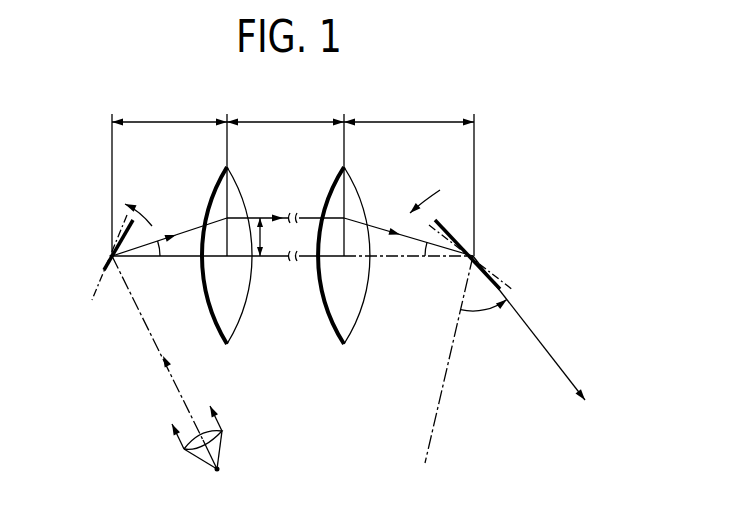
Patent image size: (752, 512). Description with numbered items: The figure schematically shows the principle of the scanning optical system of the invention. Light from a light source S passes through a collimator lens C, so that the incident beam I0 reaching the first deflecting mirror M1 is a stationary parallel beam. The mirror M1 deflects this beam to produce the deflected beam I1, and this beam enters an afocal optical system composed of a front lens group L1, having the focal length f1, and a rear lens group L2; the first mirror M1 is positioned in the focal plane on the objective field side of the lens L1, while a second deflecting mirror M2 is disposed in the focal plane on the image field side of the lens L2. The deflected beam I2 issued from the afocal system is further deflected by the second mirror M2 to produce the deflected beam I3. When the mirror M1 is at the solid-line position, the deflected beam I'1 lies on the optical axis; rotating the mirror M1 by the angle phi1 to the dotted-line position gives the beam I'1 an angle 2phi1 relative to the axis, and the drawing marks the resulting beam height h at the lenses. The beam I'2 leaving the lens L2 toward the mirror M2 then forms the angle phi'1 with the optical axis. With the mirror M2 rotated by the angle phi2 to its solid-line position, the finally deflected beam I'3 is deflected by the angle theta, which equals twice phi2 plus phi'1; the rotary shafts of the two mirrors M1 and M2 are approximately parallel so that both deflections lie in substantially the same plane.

The focal length of lens L1 f1 is at (293, 174).
The front lens group L1 is at (238, 330).
The rear lens group L2 is at (356, 330).
The first deflecting mirror M1 is at (98, 272).
The second deflecting mirror M2 is at (500, 287).
The incident beam I0 is at (176, 373).
The deflected beam from first mirror I1 is at (180, 259).
The deflected beam after rotation of first mirror I'1 is at (252, 203).
The deflected beam issued from afocal optical system I2 is at (380, 262).
The deflected beam going to second mirror I'2 is at (408, 217).
The deflected beam from second mirror I3 is at (442, 405).
The finally deflected beam I'3 is at (539, 328).
The light source S is at (225, 480).
The collimator lens C is at (205, 437).
The beam height offset h is at (266, 237).
The rotation angle of first mirror phi1 is at (138, 205).
The deflection angle of beam at first mirror 2phi1 is at (160, 257).
The rotation angle of second mirror phi2 is at (423, 191).
The incident angle at second mirror phi'1 is at (415, 278).
The angle of deflection theta is at (484, 312).